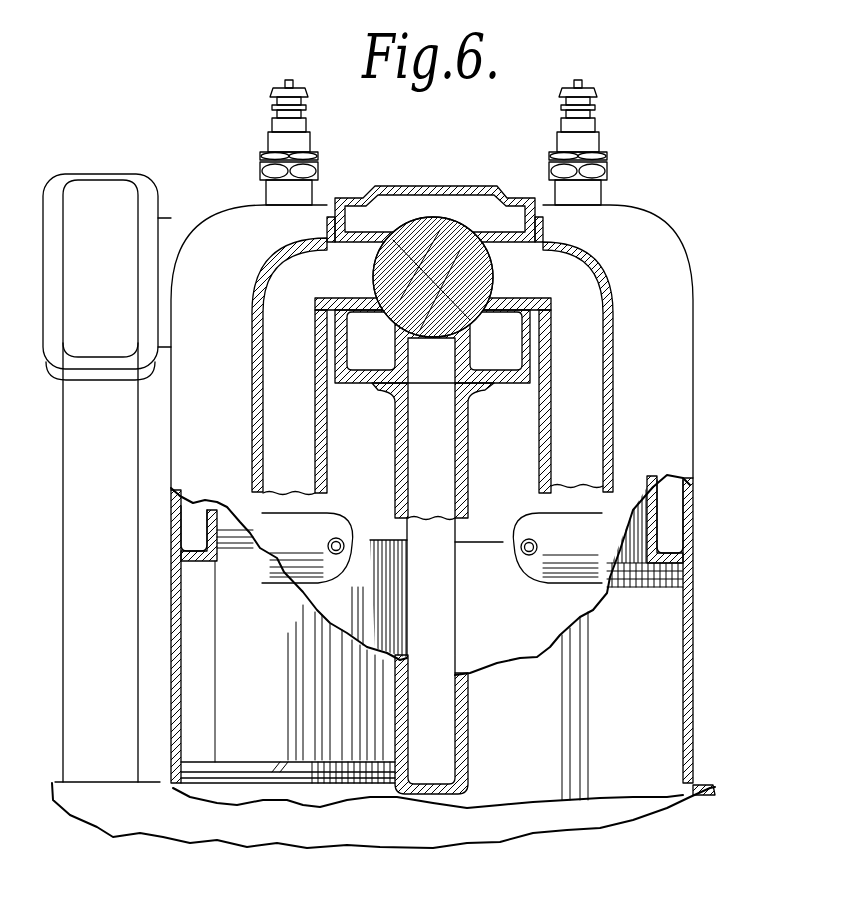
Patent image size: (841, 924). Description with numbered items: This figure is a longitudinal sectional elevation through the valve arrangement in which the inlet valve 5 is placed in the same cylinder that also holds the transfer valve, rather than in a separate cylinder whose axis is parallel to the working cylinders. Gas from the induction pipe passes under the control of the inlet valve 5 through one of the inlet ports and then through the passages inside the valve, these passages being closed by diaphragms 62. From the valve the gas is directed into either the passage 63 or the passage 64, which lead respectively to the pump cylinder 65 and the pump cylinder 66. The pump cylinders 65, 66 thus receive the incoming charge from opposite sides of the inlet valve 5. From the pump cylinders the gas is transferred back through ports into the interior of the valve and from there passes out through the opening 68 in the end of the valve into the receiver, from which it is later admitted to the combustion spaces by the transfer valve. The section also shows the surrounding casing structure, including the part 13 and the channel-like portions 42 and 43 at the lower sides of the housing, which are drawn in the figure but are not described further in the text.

The inlet valve 5 is at (402, 275).
The valve stem 13 is at (432, 462).
The left channel 42 is at (217, 512).
The right channel 43 is at (647, 513).
The diaphragms 62 is at (428, 342).
The passage 63 is at (293, 400).
The passage 64 is at (572, 337).
The pump cylinder 65 is at (173, 653).
The pump cylinder 66 is at (678, 607).
The opening 68 is at (432, 243).